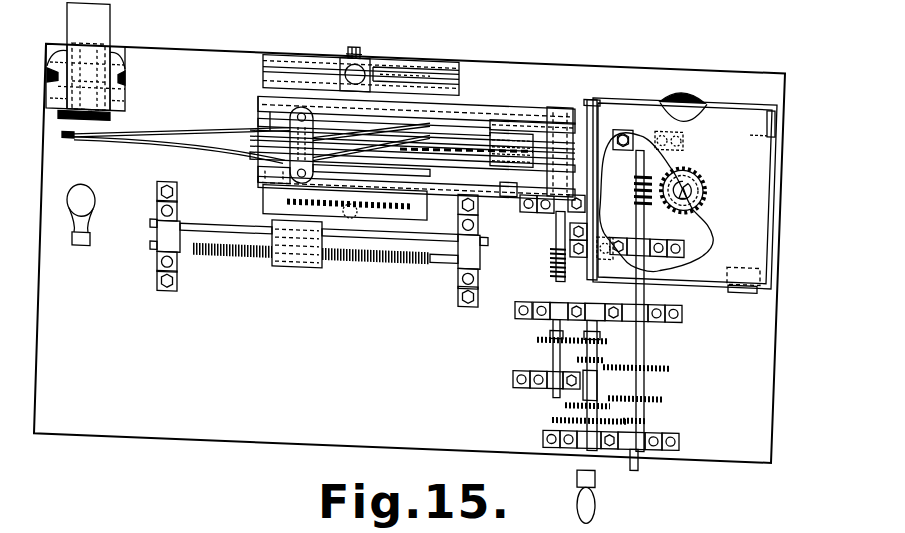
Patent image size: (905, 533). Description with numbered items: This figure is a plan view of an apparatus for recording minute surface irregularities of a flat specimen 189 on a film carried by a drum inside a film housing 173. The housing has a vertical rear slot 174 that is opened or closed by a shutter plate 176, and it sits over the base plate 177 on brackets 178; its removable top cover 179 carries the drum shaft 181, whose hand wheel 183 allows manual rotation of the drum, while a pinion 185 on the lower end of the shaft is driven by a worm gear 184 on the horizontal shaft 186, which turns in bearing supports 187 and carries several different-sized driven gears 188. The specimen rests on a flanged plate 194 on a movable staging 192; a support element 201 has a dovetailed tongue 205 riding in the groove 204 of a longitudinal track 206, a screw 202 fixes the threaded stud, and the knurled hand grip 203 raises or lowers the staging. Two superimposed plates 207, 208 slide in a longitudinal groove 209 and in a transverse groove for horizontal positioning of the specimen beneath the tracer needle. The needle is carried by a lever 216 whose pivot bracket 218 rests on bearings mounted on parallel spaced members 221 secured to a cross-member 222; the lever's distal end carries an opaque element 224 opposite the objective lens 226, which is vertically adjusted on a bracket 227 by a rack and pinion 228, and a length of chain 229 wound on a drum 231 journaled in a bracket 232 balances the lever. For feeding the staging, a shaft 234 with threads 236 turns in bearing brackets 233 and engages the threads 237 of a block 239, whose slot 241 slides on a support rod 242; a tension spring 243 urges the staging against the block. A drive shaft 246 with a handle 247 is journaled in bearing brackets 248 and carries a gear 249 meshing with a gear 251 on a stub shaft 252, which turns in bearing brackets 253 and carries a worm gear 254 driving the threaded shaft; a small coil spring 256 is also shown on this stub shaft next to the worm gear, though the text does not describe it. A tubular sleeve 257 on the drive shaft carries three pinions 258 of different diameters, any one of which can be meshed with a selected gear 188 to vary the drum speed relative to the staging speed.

The film housing 173 is at (745, 73).
The slot 174 is at (692, 100).
The shutter plate 176 is at (682, 76).
The base plate 177 is at (736, 395).
The brackets 178 is at (591, 82).
The top cover 179 is at (685, 193).
The shaft 181 is at (688, 158).
The hand wheel 183 is at (688, 142).
The worm gear 184 is at (634, 150).
The pinion 185 is at (703, 178).
The shaft 186 is at (646, 213).
The bearing supports 187 is at (623, 110).
The driven gears 188 is at (658, 388).
The specimen 189 is at (335, 124).
The movable staging 192 is at (260, 194).
The plate 194 is at (385, 126).
The support element 201 is at (370, 48).
The screw 202 is at (356, 33).
The knurled hand grip 203 is at (336, 44).
The groove 204 is at (430, 56).
The dovetailed tongue 205 is at (405, 75).
The track 206 is at (268, 44).
The lowermost plate 207 is at (423, 146).
The upper plate 208 is at (315, 108).
The longitudinal groove 209 is at (262, 90).
The lever 216 is at (166, 132).
The bracket 218 is at (258, 119).
The spaced members 221 is at (258, 164).
The cross-member 222 is at (538, 95).
The opaque element 224 is at (68, 136).
The objective lens 226 is at (102, 32).
The bracket 227 is at (125, 58).
The rack and pinion 228 is at (122, 87).
The chain 229 is at (486, 149).
The drum 231 is at (376, 123).
The bracket 232 is at (498, 100).
The bearing brackets 233 is at (180, 258).
The shaft 234 is at (440, 247).
The threads 236 is at (385, 249).
The threads 237 is at (276, 256).
The block 239 is at (300, 257).
The slot 241 is at (272, 216).
The support rod 242 is at (152, 216).
The tension spring 243 is at (528, 191).
The drive shaft 246 is at (576, 464).
The handle 247 is at (597, 490).
The bearing brackets 248 is at (676, 309).
The gear 249 is at (597, 334).
The gear 251 is at (542, 330).
The stub shaft 252 is at (553, 350).
The bearing brackets 253 is at (562, 221).
The worm gear 254 is at (555, 260).
The spring 256 is at (552, 242).
The tubular sleeve 257 is at (597, 382).
The pinions 258 is at (601, 349).